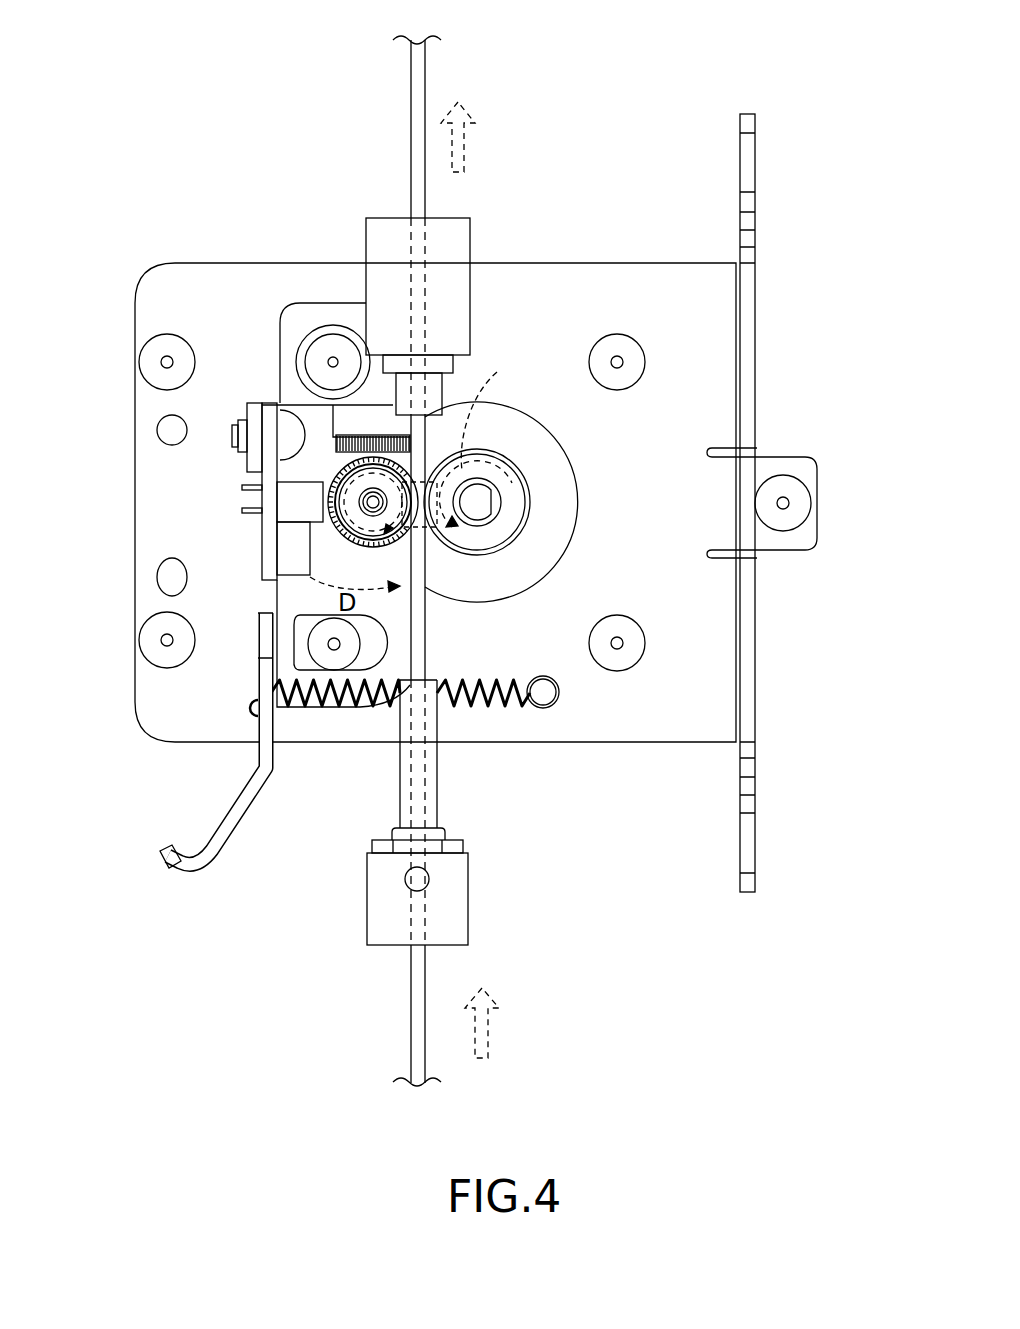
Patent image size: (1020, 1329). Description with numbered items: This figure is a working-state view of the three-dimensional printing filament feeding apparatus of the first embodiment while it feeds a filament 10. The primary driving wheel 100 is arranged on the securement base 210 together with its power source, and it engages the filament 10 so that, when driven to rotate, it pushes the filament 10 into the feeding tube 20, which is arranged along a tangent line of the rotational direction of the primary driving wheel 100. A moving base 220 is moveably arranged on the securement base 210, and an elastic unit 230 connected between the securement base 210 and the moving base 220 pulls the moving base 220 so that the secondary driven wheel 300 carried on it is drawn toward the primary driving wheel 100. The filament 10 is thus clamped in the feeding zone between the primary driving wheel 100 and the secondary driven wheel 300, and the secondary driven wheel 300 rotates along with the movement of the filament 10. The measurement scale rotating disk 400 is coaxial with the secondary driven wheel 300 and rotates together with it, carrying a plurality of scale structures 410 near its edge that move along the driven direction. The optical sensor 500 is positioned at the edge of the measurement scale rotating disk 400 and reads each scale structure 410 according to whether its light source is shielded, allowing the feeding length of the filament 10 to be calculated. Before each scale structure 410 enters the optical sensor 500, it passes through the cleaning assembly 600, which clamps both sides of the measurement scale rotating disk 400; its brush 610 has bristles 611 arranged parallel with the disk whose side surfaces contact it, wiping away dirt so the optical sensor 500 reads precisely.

The filament 10 is at (424, 68).
The feeding tube 20 is at (453, 240).
The primary driving wheel 100 is at (518, 487).
The securement base 210 is at (680, 713).
The moving base 220 is at (310, 320).
The elastic unit 230 is at (482, 705).
The secondary driven wheel 300 is at (307, 558).
The measurement scale rotating disk 400 is at (337, 573).
The scale structures 410 is at (403, 573).
The optical sensor 500 is at (297, 502).
The cleaning assembly 600 is at (300, 395).
The brush 610 is at (333, 436).
The bristles 611 is at (262, 468).